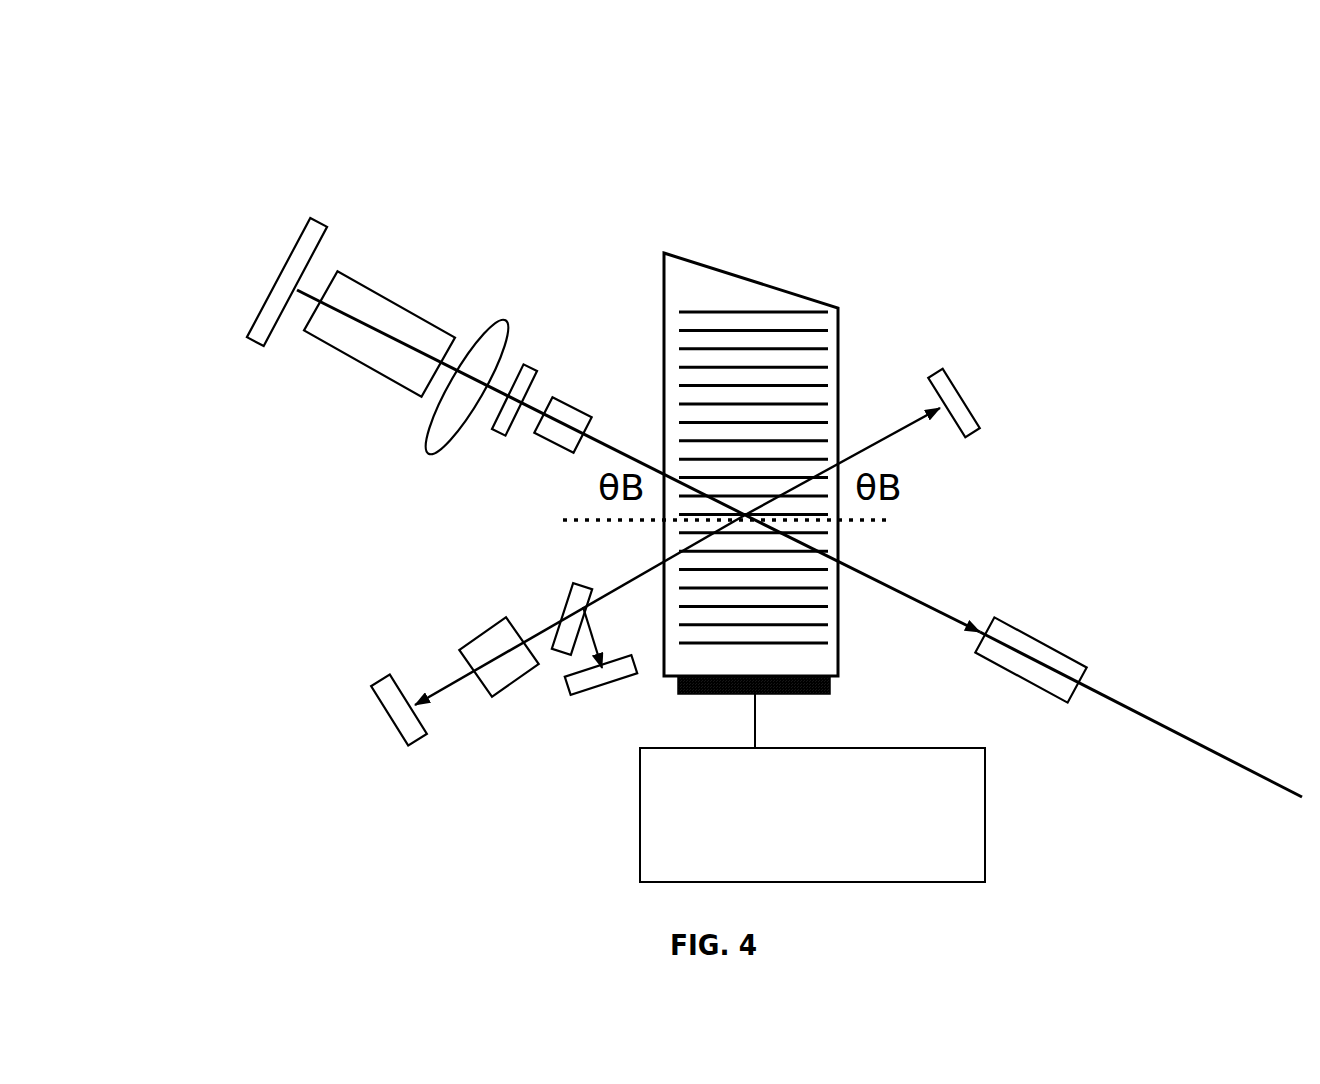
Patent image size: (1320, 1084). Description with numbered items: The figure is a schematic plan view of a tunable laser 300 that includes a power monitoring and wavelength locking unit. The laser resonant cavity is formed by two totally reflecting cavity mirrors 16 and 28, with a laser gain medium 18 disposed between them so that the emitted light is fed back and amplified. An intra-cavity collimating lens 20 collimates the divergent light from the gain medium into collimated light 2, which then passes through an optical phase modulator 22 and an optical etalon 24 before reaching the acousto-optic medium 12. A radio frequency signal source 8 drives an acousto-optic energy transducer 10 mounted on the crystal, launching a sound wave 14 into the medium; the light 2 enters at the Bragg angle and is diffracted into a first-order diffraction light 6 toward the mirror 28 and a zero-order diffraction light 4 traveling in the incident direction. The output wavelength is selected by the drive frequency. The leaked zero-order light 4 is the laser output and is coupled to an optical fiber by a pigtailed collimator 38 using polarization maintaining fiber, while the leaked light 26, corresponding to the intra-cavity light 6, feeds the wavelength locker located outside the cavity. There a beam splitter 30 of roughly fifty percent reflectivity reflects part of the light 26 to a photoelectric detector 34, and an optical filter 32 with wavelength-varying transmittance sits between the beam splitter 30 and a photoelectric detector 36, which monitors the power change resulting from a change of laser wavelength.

The light 2 is at (613, 447).
The zero-order diffraction light 4 is at (897, 588).
The first-order diffraction light 6 is at (868, 440).
The radio frequency signal source 8 is at (640, 788).
The acousto-optic energy transducer 10 is at (830, 693).
The acousto-optic medium 12 is at (717, 267).
The sound wave 14 is at (735, 308).
The reflection cavity mirror 16 is at (257, 330).
The laser gain medium 18 is at (372, 288).
The intra-cavity collimating lens 20 is at (430, 428).
The optical phase modulator 22 is at (538, 372).
The optical etalon 24 is at (550, 440).
The zero-order diffraction light 26 is at (655, 560).
The reflection cavity mirror 28 is at (957, 383).
The beam splitter 30 is at (567, 598).
The optical filter 32 is at (487, 635).
The photoelectric detector 34 is at (580, 697).
The photoelectric detector 36 is at (372, 690).
The collimator 38 is at (1040, 650).
The tunable laser 300 is at (908, 232).